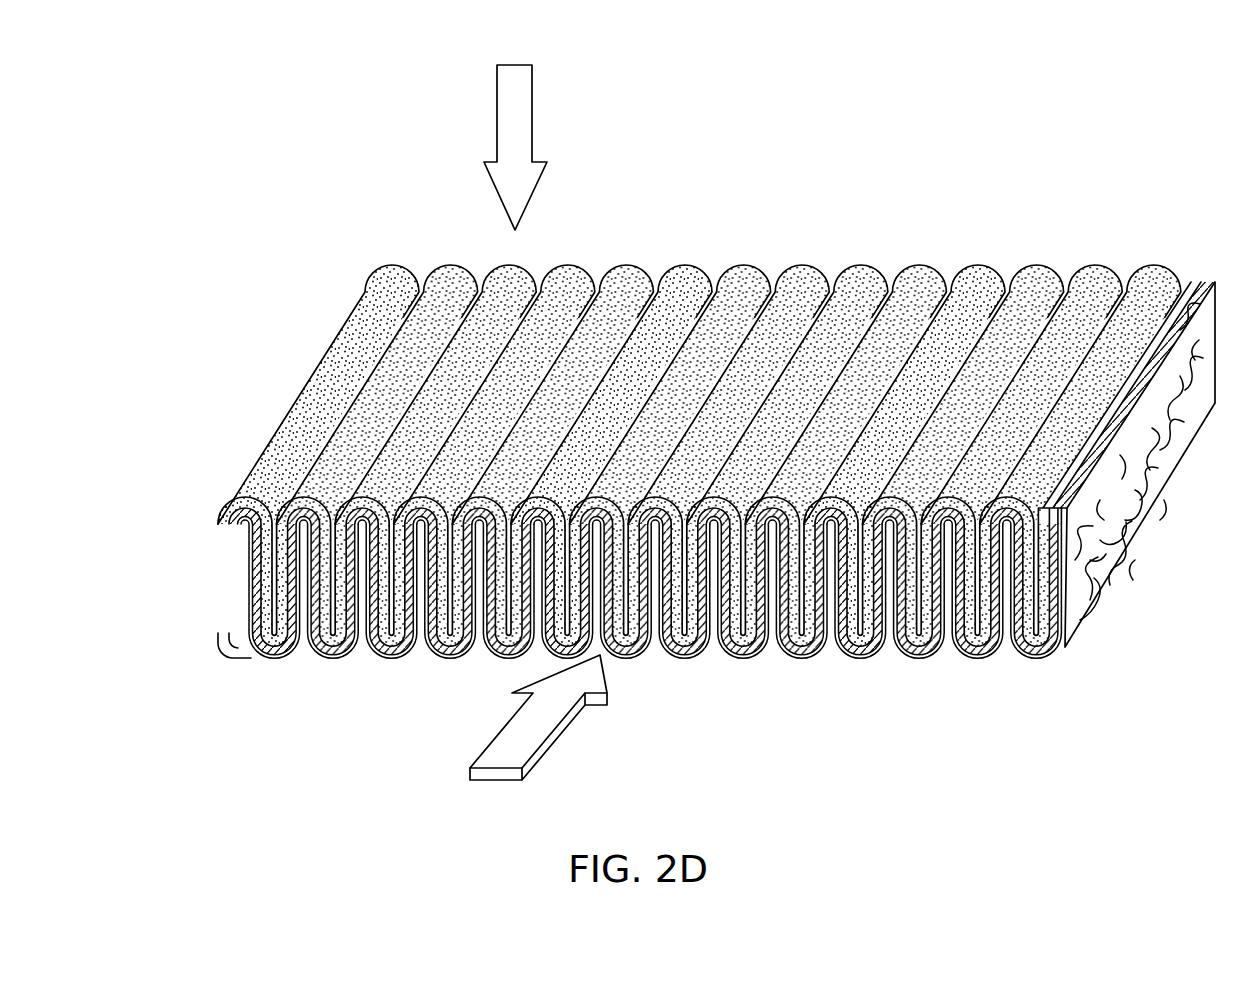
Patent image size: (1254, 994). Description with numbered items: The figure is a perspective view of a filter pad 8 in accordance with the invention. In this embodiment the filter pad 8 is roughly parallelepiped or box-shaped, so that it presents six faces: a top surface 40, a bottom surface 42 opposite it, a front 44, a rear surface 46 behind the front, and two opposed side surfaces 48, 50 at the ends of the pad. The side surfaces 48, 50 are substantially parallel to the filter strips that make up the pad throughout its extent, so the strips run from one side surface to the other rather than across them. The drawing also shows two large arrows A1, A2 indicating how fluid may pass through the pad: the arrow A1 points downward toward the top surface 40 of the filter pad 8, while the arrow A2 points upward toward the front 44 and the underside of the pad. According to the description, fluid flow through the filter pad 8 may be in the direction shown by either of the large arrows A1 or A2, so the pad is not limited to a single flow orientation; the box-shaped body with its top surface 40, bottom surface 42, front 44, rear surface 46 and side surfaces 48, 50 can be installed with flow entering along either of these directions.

The filter pad 8 is at (1012, 219).
The top surface 40 is at (622, 292).
The bottom surface 42 is at (832, 652).
The front 44 is at (746, 656).
The rear surface 46 is at (752, 290).
The side surface 48 is at (220, 596).
The side surface 50 is at (1127, 498).
The arrow A1 is at (520, 115).
The arrow A2 is at (532, 730).